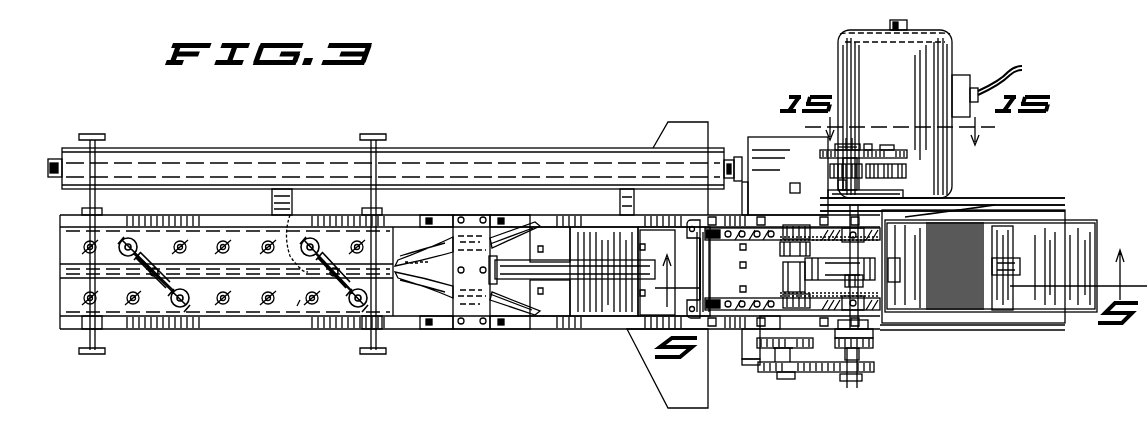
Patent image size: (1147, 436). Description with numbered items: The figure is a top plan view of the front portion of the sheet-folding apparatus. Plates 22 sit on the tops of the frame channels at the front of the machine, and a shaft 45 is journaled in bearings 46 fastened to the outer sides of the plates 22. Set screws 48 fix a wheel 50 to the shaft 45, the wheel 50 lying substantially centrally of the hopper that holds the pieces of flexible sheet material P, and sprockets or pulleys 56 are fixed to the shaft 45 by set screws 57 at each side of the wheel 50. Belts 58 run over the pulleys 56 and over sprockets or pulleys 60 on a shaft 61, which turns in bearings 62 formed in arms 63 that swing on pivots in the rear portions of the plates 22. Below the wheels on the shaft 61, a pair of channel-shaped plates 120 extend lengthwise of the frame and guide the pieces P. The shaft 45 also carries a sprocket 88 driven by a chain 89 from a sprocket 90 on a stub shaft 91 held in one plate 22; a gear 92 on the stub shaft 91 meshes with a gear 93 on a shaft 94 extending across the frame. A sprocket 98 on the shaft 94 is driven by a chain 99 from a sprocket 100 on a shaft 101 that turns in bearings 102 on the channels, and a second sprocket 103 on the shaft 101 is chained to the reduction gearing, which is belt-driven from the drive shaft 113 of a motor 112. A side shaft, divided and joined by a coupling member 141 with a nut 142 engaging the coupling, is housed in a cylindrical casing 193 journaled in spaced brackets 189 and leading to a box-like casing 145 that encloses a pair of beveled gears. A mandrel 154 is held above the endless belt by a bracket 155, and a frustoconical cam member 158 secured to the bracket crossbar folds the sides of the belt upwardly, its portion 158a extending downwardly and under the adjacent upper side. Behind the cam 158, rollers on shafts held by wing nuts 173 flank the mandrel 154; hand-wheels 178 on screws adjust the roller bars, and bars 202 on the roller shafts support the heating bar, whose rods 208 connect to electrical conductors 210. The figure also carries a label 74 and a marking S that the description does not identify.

The plates 22 is at (905, 202).
The shaft 45 is at (868, 330).
The bearings 46 is at (843, 184).
The set screws 48 is at (862, 258).
The wheel 50 is at (820, 262).
The sprockets or pulleys 56 is at (912, 236).
The set screws 57 is at (880, 212).
The belts 58 is at (783, 278).
The sprockets or pulleys 60 is at (786, 240).
The shaft 61 is at (845, 281).
The bearings 62 is at (792, 186).
The arms 63 is at (838, 186).
The bracket 74 is at (762, 330).
The sprocket 88 is at (822, 152).
The chain 89 is at (850, 140).
The sprocket 90 is at (892, 145).
The stub shaft 91 is at (870, 144).
The gear 92 is at (906, 170).
The gear 93 is at (830, 168).
The shaft 94 is at (858, 378).
The sprocket 98 is at (862, 381).
The chain 99 is at (810, 372).
The sprocket 100 is at (772, 372).
The shaft 101 is at (793, 379).
The bearings 102 is at (742, 190).
The second sprocket 103 is at (770, 355).
The motor 112 is at (952, 60).
The drive shaft 113 is at (907, 24).
The plates 120 is at (790, 256).
The coupling member 141 is at (729, 160).
The nut 142 is at (738, 157).
The casing 145 is at (770, 137).
The mandrel 154 is at (560, 258).
The bracket 155 is at (448, 215).
The cam member 158 is at (500, 230).
The portion 158a is at (415, 268).
The wing nuts 173 is at (228, 304).
The hand-wheels 178 is at (98, 132).
The brackets 189 is at (292, 200).
The cylindrical casing 193 is at (612, 148).
The bars 202 is at (165, 303).
The rods 208 is at (303, 302).
The electrical conductors 210 is at (288, 216).
The pieces of flexible sheet material P is at (958, 201).
The direction indicator S is at (896, 330).